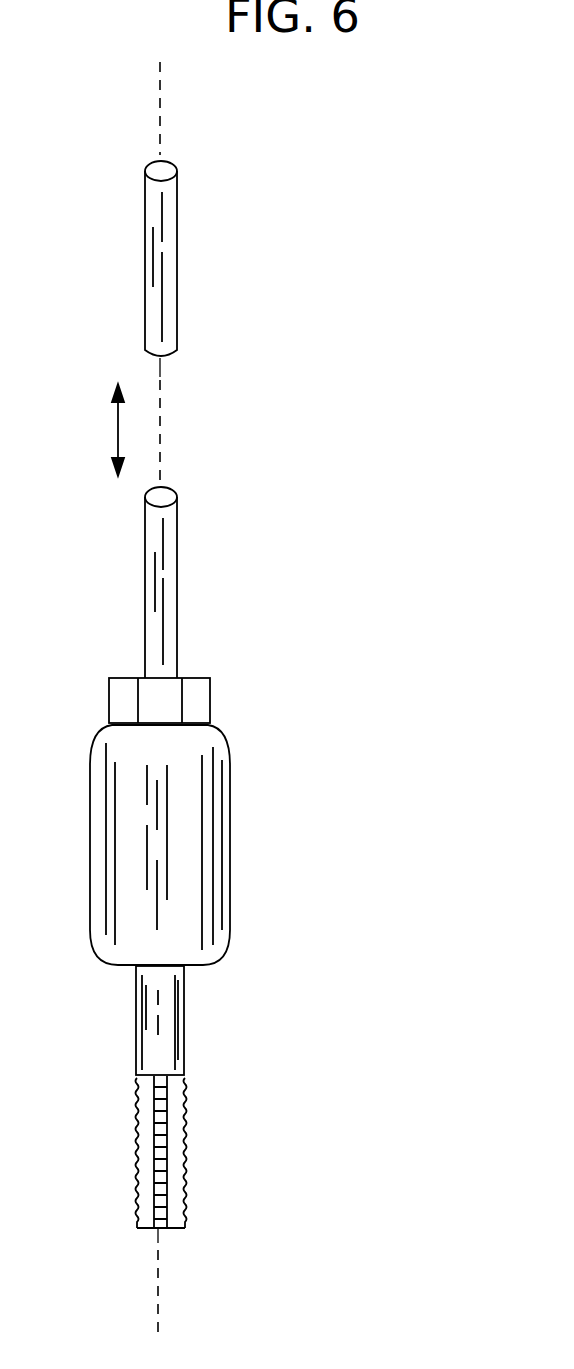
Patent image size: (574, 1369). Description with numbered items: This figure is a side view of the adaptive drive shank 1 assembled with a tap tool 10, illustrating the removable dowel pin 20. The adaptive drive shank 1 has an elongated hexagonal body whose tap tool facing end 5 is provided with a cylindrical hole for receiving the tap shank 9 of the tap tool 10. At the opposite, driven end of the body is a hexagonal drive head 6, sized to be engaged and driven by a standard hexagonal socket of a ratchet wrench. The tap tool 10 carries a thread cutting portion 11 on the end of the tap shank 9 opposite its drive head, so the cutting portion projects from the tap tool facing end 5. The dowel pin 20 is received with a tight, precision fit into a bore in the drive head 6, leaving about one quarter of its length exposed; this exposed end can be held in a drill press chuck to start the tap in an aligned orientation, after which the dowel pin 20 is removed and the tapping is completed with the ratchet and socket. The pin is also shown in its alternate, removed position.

The adaptive drive shank 1 is at (322, 840).
The tap tool facing end 5 is at (202, 968).
The hexagonal drive head 6 is at (210, 695).
The tap shank 9 is at (155, 1048).
The tap tool 10 is at (300, 1123).
The thread cutting portion 11 is at (185, 1193).
The dowel pin 20 is at (177, 560).